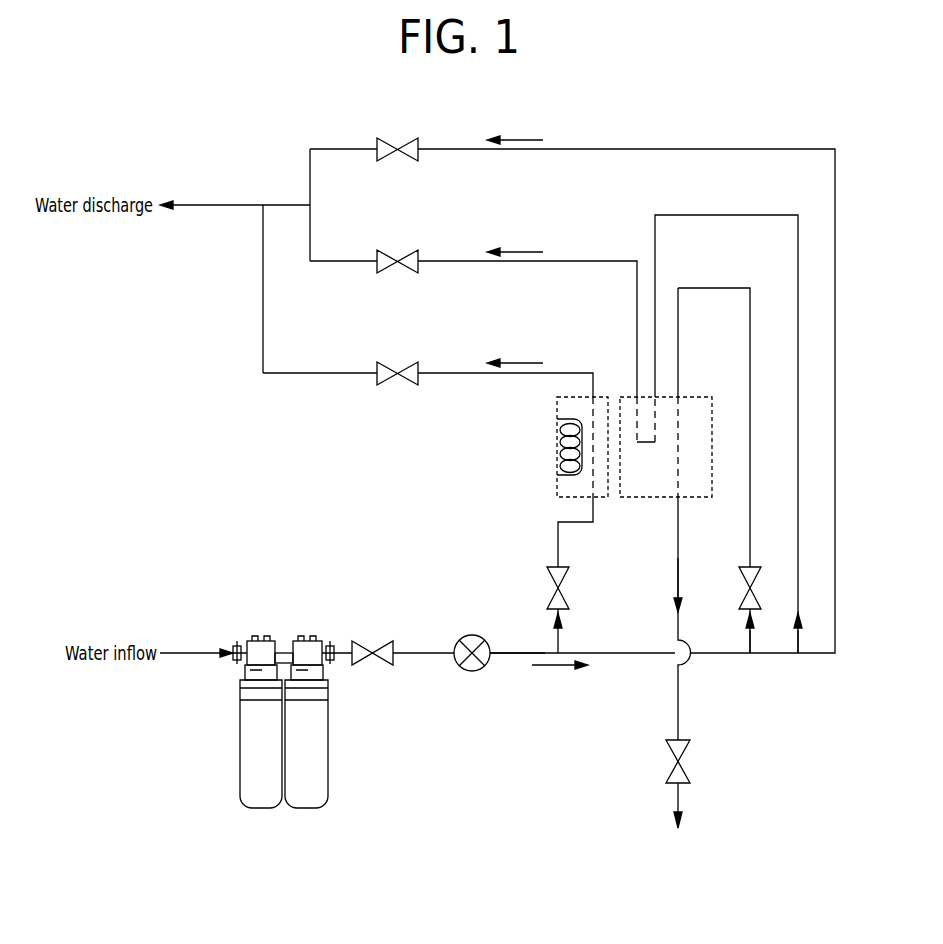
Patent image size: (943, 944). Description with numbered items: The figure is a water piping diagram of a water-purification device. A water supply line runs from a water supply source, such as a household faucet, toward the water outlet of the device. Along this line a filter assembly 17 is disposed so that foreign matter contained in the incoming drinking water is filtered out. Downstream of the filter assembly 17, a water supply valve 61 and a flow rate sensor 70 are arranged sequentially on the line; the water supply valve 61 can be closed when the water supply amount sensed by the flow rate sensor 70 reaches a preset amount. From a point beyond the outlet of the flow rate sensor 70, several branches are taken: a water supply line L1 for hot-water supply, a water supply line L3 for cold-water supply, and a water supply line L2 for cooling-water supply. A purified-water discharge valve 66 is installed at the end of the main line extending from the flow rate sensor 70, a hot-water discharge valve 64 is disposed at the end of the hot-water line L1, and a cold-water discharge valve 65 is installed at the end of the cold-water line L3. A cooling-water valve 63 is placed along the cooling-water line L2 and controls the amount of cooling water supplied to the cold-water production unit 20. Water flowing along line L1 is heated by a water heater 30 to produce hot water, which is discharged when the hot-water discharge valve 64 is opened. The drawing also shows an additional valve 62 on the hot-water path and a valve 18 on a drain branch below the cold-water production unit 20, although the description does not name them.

The filter assembly 17 is at (262, 640).
The drain valve 18 is at (682, 764).
The cold-water production unit 20 is at (700, 397).
The water heater 30 is at (557, 433).
The water supply valve 61 is at (364, 650).
The hot water valve 62 is at (552, 581).
The cooling-water valve 63 is at (758, 582).
The hot-water discharge valve 64 is at (403, 365).
The cold-water discharge valve 65 is at (406, 252).
The purified-water discharge valve 66 is at (405, 140).
The flow rate sensor 70 is at (471, 636).
The water supply line for hot-water supply L1 is at (556, 637).
The water supply line for cooling-water supply L2 is at (749, 647).
The water supply line for cold-water supply L3 is at (797, 647).